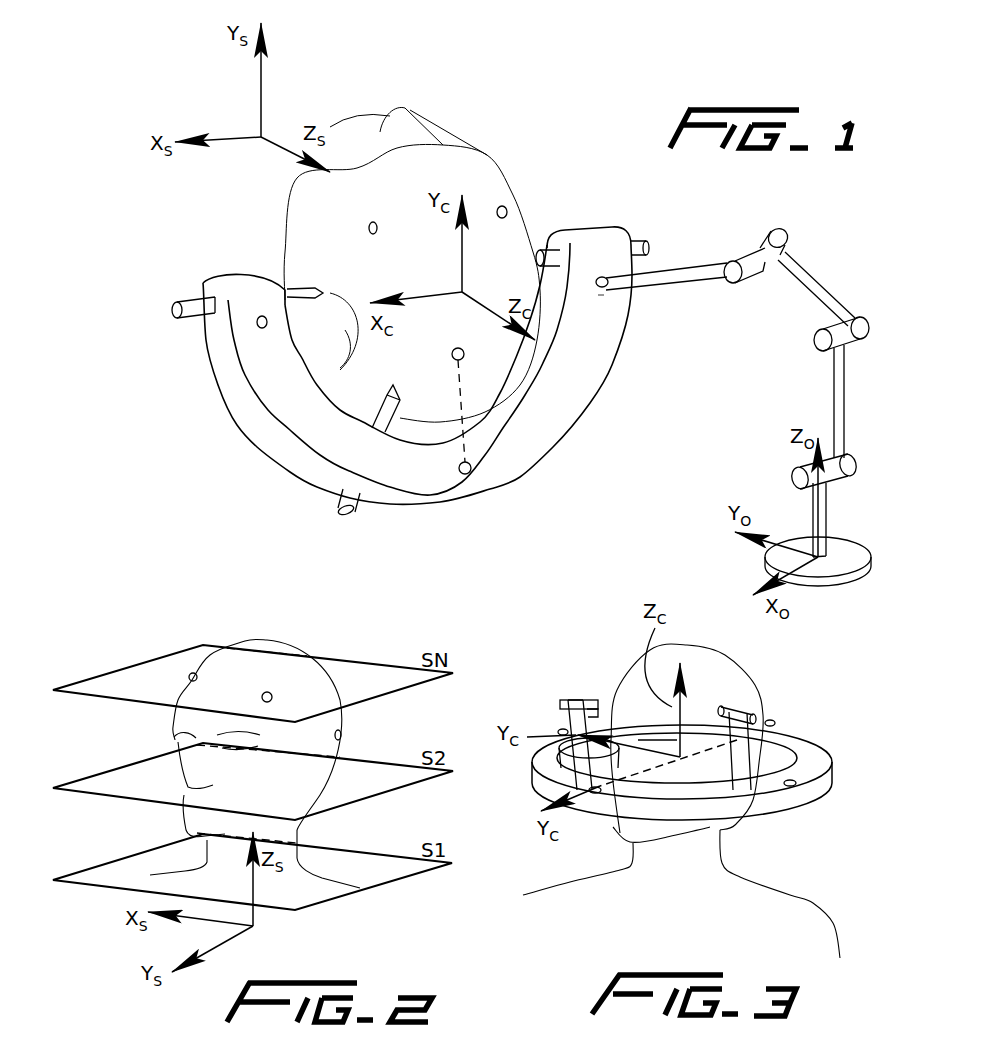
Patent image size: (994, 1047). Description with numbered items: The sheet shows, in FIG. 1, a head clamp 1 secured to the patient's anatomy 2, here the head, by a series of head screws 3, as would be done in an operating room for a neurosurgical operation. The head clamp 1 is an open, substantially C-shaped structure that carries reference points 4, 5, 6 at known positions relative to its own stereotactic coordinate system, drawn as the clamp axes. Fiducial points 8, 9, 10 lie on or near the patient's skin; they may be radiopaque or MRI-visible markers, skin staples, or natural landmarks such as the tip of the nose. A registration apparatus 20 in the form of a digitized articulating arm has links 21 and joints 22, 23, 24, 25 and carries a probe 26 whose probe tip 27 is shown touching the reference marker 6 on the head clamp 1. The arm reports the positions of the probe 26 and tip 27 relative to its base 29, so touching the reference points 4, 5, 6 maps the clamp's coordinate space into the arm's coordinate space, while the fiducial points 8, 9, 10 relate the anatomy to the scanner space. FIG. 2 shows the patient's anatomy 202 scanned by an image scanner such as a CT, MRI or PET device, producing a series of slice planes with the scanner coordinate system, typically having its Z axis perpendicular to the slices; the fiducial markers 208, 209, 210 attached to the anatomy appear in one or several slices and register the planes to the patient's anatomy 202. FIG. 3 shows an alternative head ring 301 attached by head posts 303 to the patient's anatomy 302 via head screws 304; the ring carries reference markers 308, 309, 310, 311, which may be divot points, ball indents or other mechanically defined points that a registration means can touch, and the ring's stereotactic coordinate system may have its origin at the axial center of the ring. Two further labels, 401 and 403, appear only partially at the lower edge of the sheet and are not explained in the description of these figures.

In FIG. 1, the head clamp 1 is at (247, 410).
In FIG. 1, the patient's anatomy 2 is at (490, 157).
In FIG. 1, the head screws 3 is at (183, 305).
In FIG. 1, the reference point 4 is at (258, 327).
In FIG. 1, the reference point 5 is at (468, 473).
In FIG. 1, the reference marker 6 is at (600, 290).
In FIG. 1, the fiducial point 8 is at (505, 207).
In FIG. 1, the fiducial point 9 is at (462, 357).
In FIG. 1, the fiducial point 10 is at (368, 228).
In FIG. 1, the registration apparatus 20 is at (834, 397).
In FIG. 1, the links 21 is at (817, 287).
In FIG. 1, the joint 22 is at (818, 340).
In FIG. 1, the joint 23 is at (783, 240).
In FIG. 1, the joint 24 is at (843, 470).
In FIG. 1, the joint 25 is at (735, 262).
In FIG. 1, the probe 26 is at (686, 270).
In FIG. 1, the probe tip 27 is at (605, 278).
In FIG. 1, the base 29 is at (820, 573).
In FIG. 2, the patient's anatomy 202 is at (285, 644).
In FIG. 2, the fiducial marker 208 is at (267, 692).
In FIG. 2, the fiducial marker 209 is at (341, 732).
In FIG. 2, the fiducial marker 210 is at (193, 673).
In FIG. 3, the head ring 301 is at (808, 750).
In FIG. 3, the patient's anatomy 302 is at (733, 662).
In FIG. 3, the head posts 303 is at (575, 700).
In FIG. 3, the head screws 304 is at (592, 700).
In FIG. 3, the reference marker 308 is at (808, 780).
In FIG. 3, the reference marker 309 is at (772, 720).
In FIG. 3, the reference marker 310 is at (590, 790).
In FIG. 3, the reference marker 311 is at (563, 729).
In FIG. 3, the component 401 is at (81, 1042).
In FIG. 3, the component 403 is at (455, 1046).